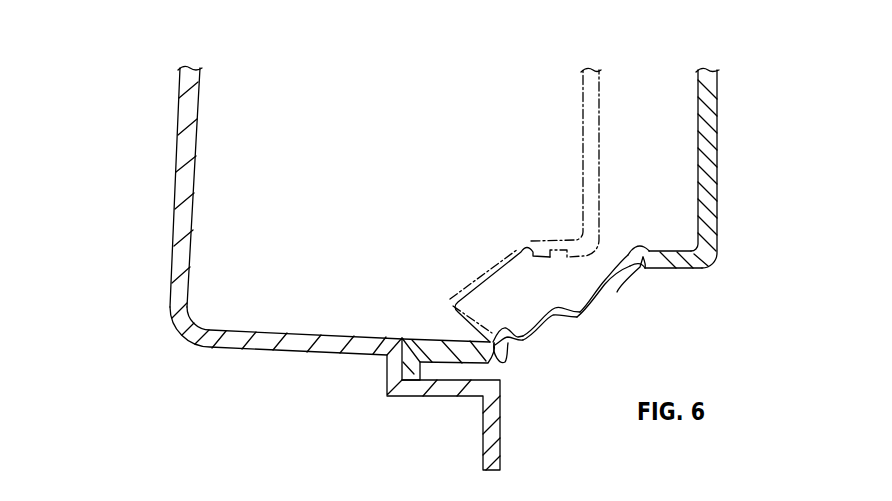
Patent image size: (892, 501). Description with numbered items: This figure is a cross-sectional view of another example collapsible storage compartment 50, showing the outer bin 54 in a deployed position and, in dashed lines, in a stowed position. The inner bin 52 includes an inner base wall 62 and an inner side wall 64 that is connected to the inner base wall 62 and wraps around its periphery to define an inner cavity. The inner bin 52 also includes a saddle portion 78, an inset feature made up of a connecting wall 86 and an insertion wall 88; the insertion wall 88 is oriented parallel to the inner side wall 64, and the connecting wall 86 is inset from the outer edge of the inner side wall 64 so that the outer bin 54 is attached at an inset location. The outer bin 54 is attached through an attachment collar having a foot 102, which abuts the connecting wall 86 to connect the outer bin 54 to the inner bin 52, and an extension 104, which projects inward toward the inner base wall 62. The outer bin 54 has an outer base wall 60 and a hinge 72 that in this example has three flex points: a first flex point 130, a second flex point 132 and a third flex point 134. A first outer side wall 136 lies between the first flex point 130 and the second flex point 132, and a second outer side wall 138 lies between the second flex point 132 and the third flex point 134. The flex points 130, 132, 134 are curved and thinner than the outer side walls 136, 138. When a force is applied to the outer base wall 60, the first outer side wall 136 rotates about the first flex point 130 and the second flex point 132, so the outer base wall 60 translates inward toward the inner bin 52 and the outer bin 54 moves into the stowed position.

The storage compartment 50 is at (160, 96).
The inner bin 52 is at (201, 106).
The outer bin 54 is at (718, 102).
The outer base wall 60 is at (717, 180).
The inner base wall 62 is at (187, 190).
The inner side wall 64 is at (315, 337).
The hinge 72 is at (607, 301).
The saddle portion 78 is at (383, 397).
The connecting wall 86 is at (393, 372).
The insertion wall 88 is at (413, 375).
The foot 102 is at (445, 396).
The extension 104 is at (432, 342).
The first flex point 130 is at (512, 338).
The second flex point 132 is at (595, 330).
The third flex point 134 is at (640, 245).
The first outer side wall 136 is at (550, 328).
The second outer side wall 138 is at (618, 292).